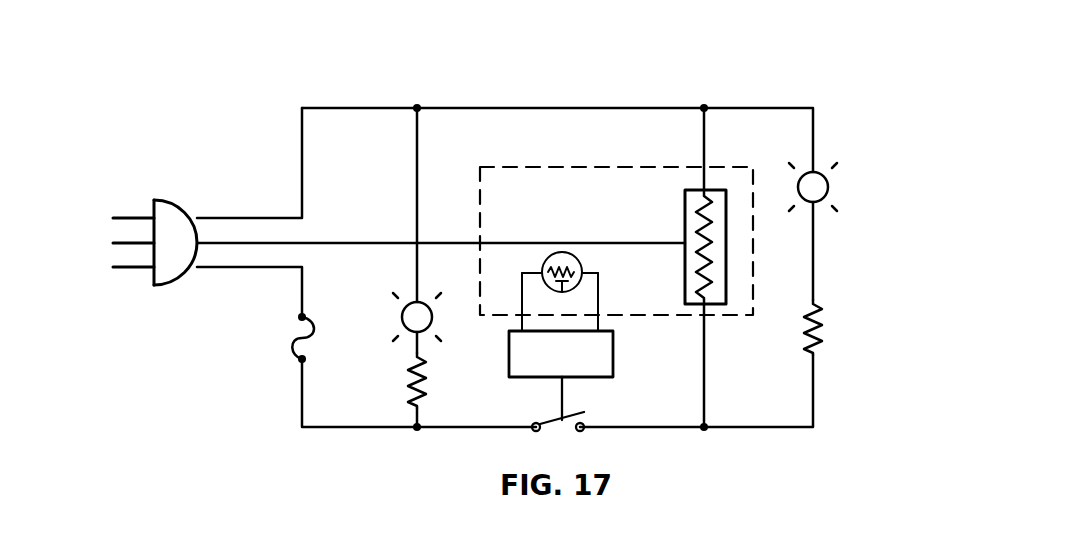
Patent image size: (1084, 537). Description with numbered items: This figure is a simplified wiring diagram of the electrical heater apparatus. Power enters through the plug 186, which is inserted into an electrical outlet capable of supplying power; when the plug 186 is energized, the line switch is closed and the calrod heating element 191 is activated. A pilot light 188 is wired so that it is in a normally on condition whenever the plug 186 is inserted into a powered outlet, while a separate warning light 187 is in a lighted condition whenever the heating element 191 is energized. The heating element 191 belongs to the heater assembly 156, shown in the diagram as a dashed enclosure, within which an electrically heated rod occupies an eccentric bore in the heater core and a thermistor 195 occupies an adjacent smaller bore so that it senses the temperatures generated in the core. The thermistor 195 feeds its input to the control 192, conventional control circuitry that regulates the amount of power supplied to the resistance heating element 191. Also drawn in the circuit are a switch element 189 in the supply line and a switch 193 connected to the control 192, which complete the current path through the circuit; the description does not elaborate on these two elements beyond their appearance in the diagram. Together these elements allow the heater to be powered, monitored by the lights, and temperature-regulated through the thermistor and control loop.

The heater assembly 156 is at (566, 167).
The plug 186 is at (157, 200).
The warning light 187 is at (829, 187).
The pilot light 188 is at (403, 319).
The thermal cutoff switch 189 is at (297, 342).
The heating element 191 is at (716, 190).
The control circuitry 192 is at (614, 372).
The switch 193 is at (552, 426).
The thermistor 195 is at (558, 252).